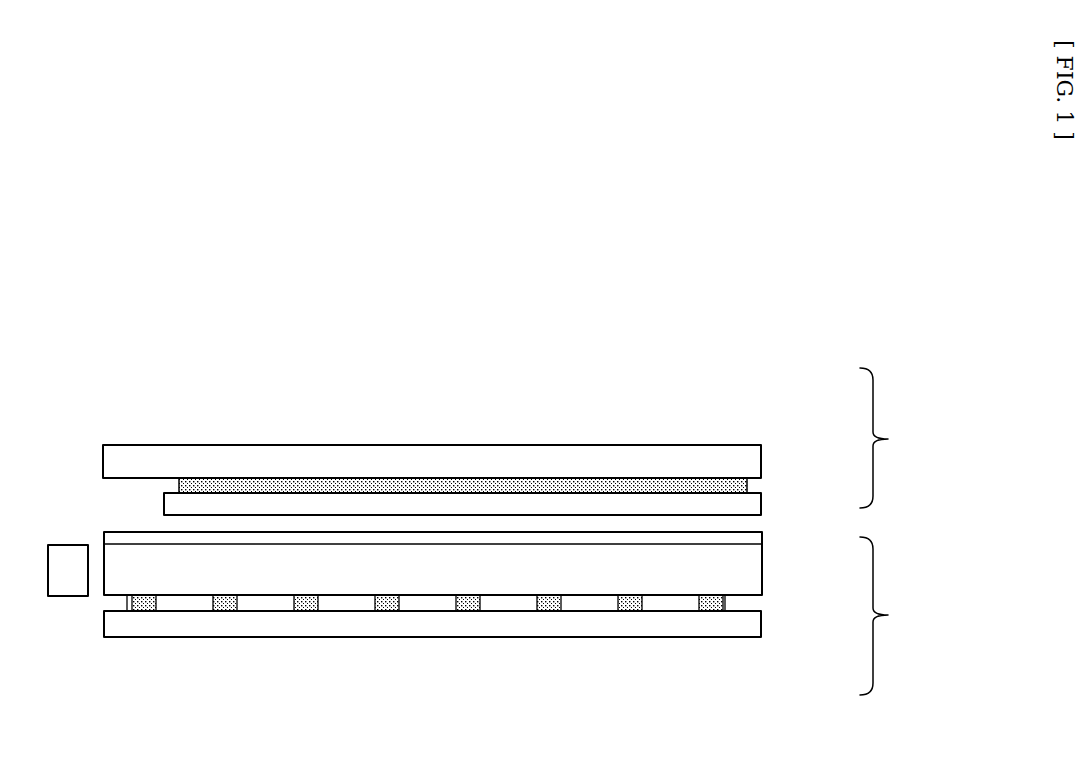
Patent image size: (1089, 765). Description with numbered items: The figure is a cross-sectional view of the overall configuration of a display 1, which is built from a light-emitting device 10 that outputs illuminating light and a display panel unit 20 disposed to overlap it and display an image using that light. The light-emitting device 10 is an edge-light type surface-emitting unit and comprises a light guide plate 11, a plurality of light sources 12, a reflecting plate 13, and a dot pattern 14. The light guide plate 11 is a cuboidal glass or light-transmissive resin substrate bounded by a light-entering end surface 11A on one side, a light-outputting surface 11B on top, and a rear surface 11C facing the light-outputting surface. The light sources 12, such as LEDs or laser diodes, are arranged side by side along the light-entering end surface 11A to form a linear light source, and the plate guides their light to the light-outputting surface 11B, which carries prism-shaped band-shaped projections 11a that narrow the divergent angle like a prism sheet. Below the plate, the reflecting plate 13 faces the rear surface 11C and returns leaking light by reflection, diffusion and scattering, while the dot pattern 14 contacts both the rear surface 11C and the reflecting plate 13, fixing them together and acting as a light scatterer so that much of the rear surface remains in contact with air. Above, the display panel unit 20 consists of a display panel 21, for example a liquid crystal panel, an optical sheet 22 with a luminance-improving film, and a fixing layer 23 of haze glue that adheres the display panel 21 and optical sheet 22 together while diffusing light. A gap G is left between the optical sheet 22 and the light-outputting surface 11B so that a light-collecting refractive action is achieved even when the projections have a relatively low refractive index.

The display 1 is at (718, 378).
The light-emitting device 10 is at (894, 616).
The light guide plate 11 is at (750, 563).
The band-shaped projections 11a is at (767, 537).
The light-entering end surface 11A is at (110, 578).
The light-outputting surface 11B is at (300, 535).
The rear surface 11C is at (437, 597).
The light source 12 is at (67, 596).
The reflecting plate 13 is at (753, 620).
The dot pattern 14 is at (630, 605).
The display panel unit 20 is at (894, 438).
The display panel 21 is at (752, 458).
The optical sheet 22 is at (753, 505).
The fixing layer 23 is at (747, 488).
The gap G is at (160, 523).